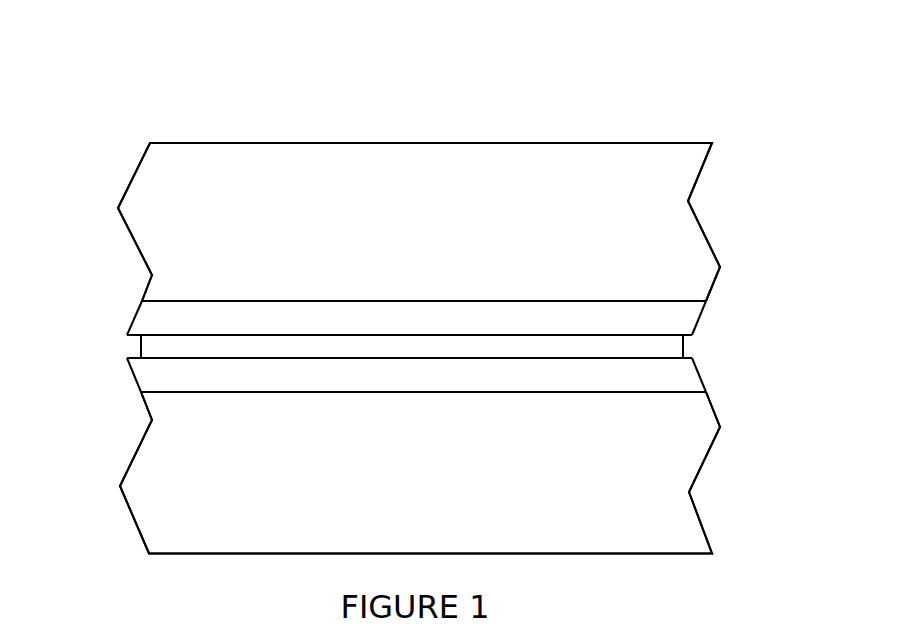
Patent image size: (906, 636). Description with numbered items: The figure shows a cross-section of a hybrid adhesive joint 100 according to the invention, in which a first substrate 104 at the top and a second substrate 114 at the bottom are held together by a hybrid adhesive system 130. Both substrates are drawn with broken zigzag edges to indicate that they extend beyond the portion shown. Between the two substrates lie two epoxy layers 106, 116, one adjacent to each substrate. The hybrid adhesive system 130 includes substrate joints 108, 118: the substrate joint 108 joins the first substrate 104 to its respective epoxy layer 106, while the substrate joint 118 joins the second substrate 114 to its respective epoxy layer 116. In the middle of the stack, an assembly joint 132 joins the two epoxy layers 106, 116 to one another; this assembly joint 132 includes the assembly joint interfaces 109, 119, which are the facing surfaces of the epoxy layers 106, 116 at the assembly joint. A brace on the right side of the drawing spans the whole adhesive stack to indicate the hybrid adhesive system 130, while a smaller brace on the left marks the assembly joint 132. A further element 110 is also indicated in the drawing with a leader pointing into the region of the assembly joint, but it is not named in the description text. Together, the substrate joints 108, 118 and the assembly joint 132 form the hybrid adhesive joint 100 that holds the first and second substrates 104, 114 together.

The hybrid adhesive joint 100 is at (642, 108).
The first substrate 104 is at (640, 174).
The epoxy layer 106 is at (640, 326).
The substrate joint 108 is at (655, 301).
The assembly joint interface 109 is at (668, 335).
The spacer / gap 110 is at (165, 343).
The second substrate 114 is at (640, 542).
The epoxy layer 116 is at (640, 387).
The substrate joint 118 is at (658, 392).
The assembly joint interface 119 is at (673, 360).
The hybrid adhesive system 130 is at (719, 295).
The assembly joint 132 is at (123, 323).